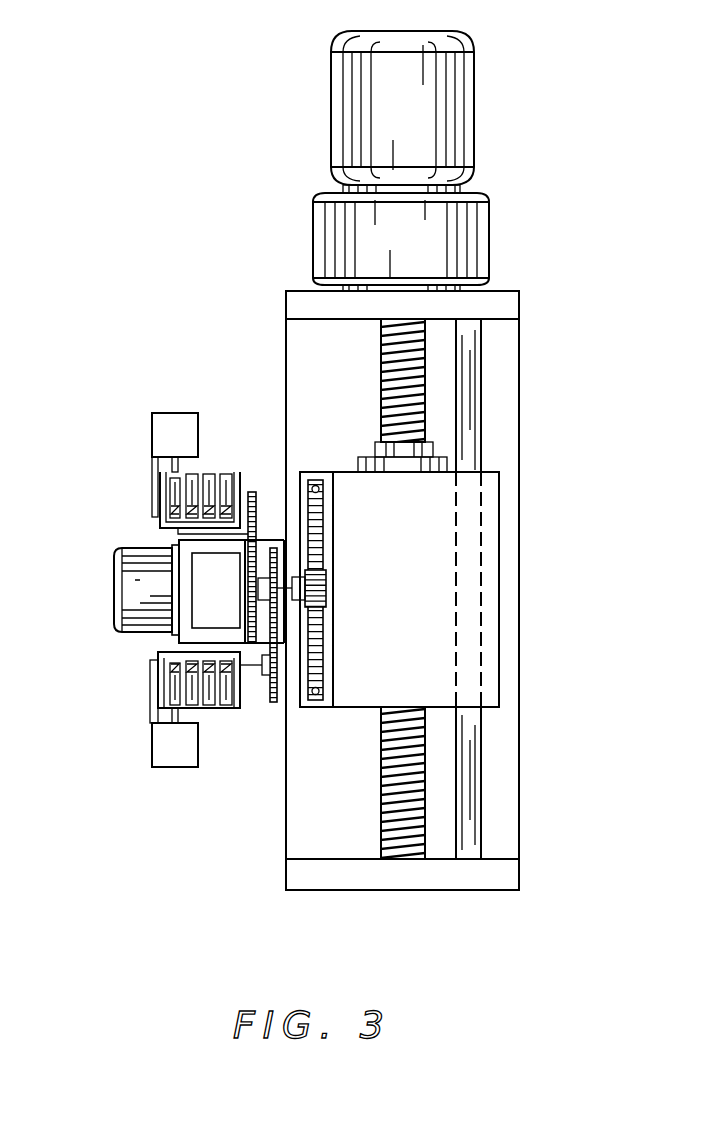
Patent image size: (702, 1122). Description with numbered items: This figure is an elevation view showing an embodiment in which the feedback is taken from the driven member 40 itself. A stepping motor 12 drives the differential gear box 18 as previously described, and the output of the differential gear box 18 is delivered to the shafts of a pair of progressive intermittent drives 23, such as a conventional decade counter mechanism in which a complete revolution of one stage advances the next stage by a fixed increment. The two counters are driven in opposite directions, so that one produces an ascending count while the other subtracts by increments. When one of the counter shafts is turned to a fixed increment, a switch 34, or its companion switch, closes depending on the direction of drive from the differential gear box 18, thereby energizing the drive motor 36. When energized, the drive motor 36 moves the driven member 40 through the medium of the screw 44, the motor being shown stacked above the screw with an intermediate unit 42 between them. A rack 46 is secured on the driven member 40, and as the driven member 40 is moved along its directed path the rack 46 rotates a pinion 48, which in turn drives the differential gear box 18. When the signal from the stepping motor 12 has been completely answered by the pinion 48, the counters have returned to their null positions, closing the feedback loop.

The stepping motor 12 is at (120, 632).
The differential gear box 18 is at (230, 595).
The progressive intermittent drives 23 is at (209, 465).
The switch 34 is at (170, 412).
The drive motor 36 is at (475, 130).
The driven member 40 is at (416, 618).
The coupling/gear reducer 42 is at (490, 250).
The screw 44 is at (381, 378).
The rack 46 is at (323, 525).
The pinion 48 is at (326, 573).